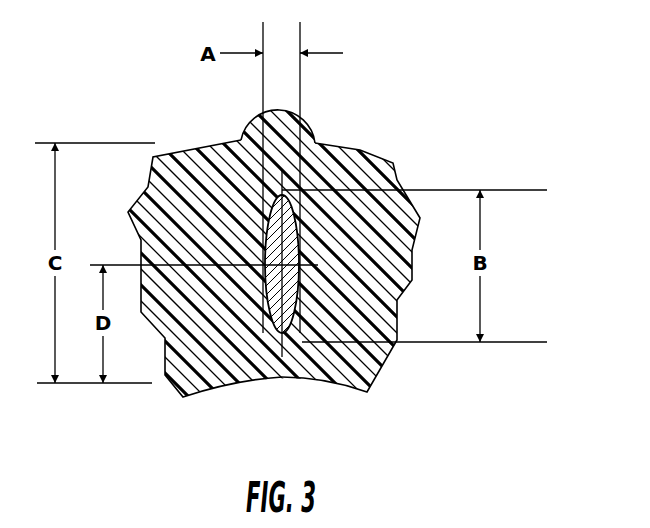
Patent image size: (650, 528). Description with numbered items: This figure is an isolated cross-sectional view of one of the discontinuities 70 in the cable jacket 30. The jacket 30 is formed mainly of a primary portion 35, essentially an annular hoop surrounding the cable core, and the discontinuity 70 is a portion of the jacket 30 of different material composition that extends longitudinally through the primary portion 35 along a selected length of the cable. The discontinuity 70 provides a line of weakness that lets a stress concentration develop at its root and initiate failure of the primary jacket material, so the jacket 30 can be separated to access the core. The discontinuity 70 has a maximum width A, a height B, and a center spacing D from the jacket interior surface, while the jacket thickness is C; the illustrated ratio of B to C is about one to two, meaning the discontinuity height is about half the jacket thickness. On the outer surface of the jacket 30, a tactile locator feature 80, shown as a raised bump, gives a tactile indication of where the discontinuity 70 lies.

The jacket 30 is at (300, 378).
The primary portion 35 is at (205, 370).
The discontinuity 70 is at (307, 232).
The tactile locator feature 80 is at (242, 135).